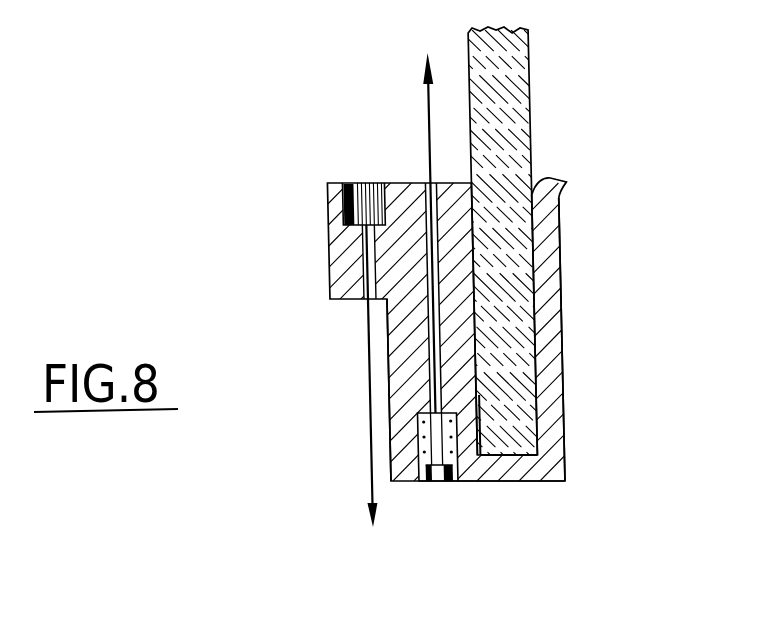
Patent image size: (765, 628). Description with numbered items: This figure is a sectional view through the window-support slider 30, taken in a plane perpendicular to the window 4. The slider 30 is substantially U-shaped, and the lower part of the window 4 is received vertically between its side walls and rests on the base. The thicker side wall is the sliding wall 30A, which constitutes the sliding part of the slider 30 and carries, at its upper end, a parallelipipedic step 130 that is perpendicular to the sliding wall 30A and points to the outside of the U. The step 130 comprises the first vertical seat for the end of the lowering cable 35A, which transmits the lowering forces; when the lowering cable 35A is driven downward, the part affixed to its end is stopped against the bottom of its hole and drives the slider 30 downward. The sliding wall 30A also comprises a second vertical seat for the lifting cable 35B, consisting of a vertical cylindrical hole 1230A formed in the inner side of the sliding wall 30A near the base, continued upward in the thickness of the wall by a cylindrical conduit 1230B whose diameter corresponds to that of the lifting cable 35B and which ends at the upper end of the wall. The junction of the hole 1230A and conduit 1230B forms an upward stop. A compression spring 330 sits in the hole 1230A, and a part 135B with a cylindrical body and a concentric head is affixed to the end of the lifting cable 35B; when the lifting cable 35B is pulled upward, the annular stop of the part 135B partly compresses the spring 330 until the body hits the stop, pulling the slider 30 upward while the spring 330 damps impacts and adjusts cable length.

The window 4 is at (507, 107).
The slider 30 is at (568, 412).
The sliding wall 30A is at (397, 356).
The lowering cable 35A is at (371, 457).
The lifting cable 35B is at (427, 98).
The step 130 is at (337, 240).
The part 135B is at (441, 483).
The compression spring 330 is at (457, 442).
The cylindrical hole 1230A is at (420, 432).
The cylindrical conduit 1230B is at (420, 319).